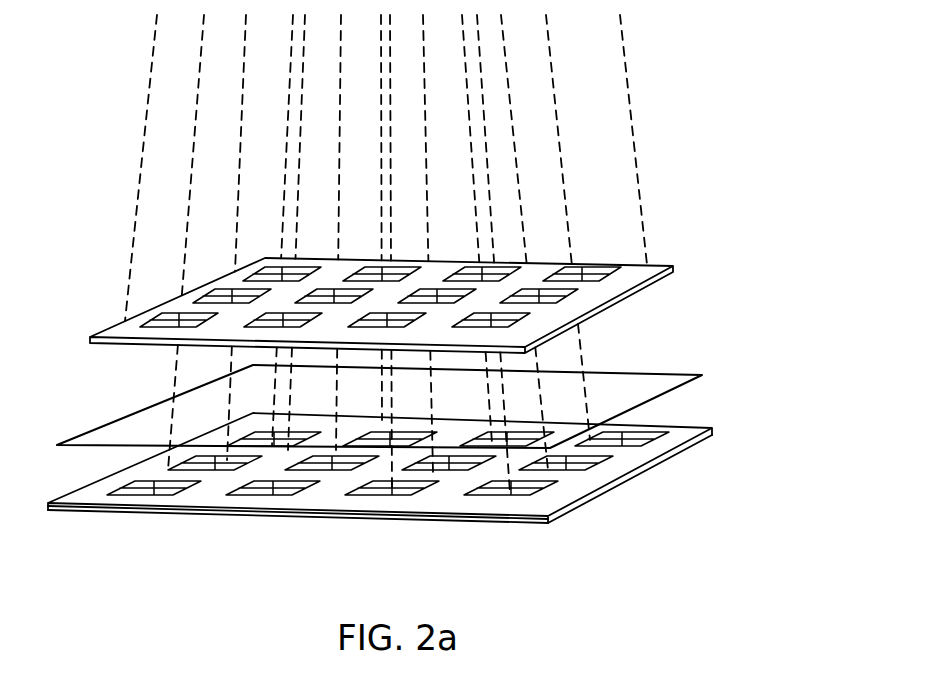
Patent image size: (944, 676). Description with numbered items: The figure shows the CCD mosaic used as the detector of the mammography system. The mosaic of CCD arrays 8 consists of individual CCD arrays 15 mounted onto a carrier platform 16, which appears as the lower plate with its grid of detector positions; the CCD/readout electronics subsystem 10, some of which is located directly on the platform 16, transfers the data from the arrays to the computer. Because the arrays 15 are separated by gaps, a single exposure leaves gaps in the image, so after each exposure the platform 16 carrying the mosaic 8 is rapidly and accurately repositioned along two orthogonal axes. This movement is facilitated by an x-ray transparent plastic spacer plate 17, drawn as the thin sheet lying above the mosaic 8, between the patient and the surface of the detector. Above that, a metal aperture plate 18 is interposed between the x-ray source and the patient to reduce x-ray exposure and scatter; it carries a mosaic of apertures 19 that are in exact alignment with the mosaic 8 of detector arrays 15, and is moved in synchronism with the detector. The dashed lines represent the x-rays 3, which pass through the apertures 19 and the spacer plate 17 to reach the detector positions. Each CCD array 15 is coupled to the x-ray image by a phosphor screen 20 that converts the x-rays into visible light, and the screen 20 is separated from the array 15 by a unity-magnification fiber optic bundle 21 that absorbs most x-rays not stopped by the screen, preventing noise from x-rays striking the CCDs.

The x-rays 3 is at (658, 198).
The mosaic of CCD arrays 8 is at (435, 491).
The CCD/readout electronics subsystem 10 is at (435, 491).
The CCD arrays 15 is at (403, 500).
The carrier platform 16 is at (380, 508).
The x-ray transparent plastic spacer plate 17 is at (147, 407).
The metal aperture plate 18 is at (400, 255).
The apertures 19 is at (255, 272).
The phosphor screen 20 is at (265, 515).
The fiber optic bundle 21 is at (178, 517).